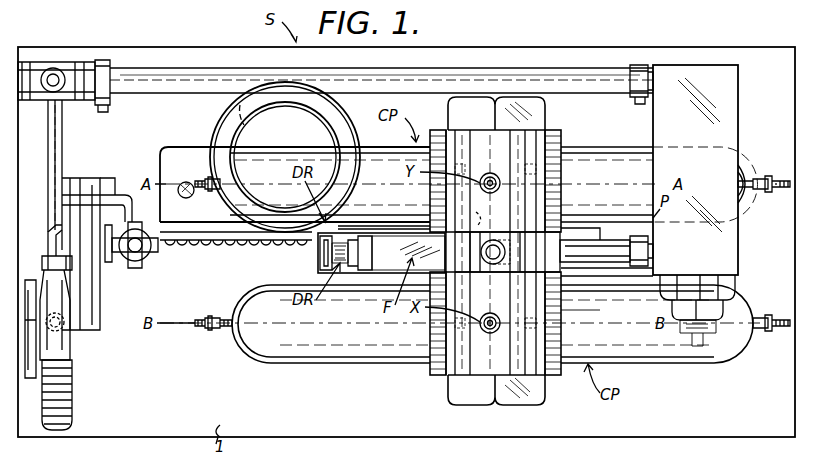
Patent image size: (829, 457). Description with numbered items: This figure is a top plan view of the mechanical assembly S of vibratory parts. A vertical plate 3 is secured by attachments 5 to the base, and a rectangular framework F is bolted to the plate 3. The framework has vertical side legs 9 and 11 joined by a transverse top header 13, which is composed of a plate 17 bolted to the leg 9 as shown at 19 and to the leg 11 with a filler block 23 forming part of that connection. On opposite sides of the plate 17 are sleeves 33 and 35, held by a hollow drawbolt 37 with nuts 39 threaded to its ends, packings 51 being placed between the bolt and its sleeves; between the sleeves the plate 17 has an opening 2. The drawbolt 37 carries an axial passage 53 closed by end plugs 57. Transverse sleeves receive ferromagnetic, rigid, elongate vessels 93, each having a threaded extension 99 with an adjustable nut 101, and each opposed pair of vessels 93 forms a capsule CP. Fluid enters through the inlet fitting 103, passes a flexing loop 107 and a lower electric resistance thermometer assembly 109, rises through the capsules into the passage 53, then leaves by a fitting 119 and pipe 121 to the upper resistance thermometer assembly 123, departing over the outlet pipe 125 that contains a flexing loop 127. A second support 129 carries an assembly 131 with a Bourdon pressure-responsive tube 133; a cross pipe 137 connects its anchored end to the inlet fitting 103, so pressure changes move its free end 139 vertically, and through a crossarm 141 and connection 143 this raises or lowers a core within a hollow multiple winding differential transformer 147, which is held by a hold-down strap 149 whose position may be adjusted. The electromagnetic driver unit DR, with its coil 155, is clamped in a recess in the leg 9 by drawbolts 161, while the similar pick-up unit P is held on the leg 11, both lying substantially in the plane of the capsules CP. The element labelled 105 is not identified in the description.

The opening 2 is at (465, 258).
The vertical plate 3 is at (230, 226).
The attachments 5 is at (183, 184).
The vertical side leg 9 is at (352, 274).
The vertical side leg 11 is at (590, 266).
The top header 13 is at (416, 220).
The plate 17 is at (410, 250).
The bolts 19 is at (361, 253).
The filler block 23 is at (555, 276).
The sleeve 33 is at (440, 127).
The sleeve 35 is at (440, 372).
The hollow drawbolt 37 is at (562, 324).
The nuts 39 is at (458, 108).
The packings 51 is at (548, 137).
The axial passage 53 is at (480, 184).
The end plugs 57 is at (512, 106).
The vessel 93 is at (387, 148).
The threaded extension 99 is at (205, 192).
The adjustable nut 101 is at (208, 177).
The inlet fitting 103 is at (78, 62).
The union nut 105 is at (113, 70).
The flexing loop 107 is at (244, 125).
The electric resistance thermometer assembly 109 is at (742, 96).
The fitting 119 is at (476, 272).
The pipe 121 is at (608, 252).
The resistance thermometer assembly 123 is at (738, 124).
The outlet pipe 125 is at (166, 86).
The flexing loop 127 is at (326, 108).
The second support 129 is at (56, 365).
The assembly 131 is at (80, 283).
The Bourdon pressure-responsive tube 133 is at (64, 406).
The cross pipe 137 is at (58, 140).
The free end 139 is at (46, 260).
The crossarm 141 is at (92, 194).
The connection 143 is at (142, 250).
The differential transformer 147 is at (112, 256).
The hold-down strap 149 is at (183, 246).
The coil 155 is at (332, 258).
The drawbolts 161 is at (320, 244).